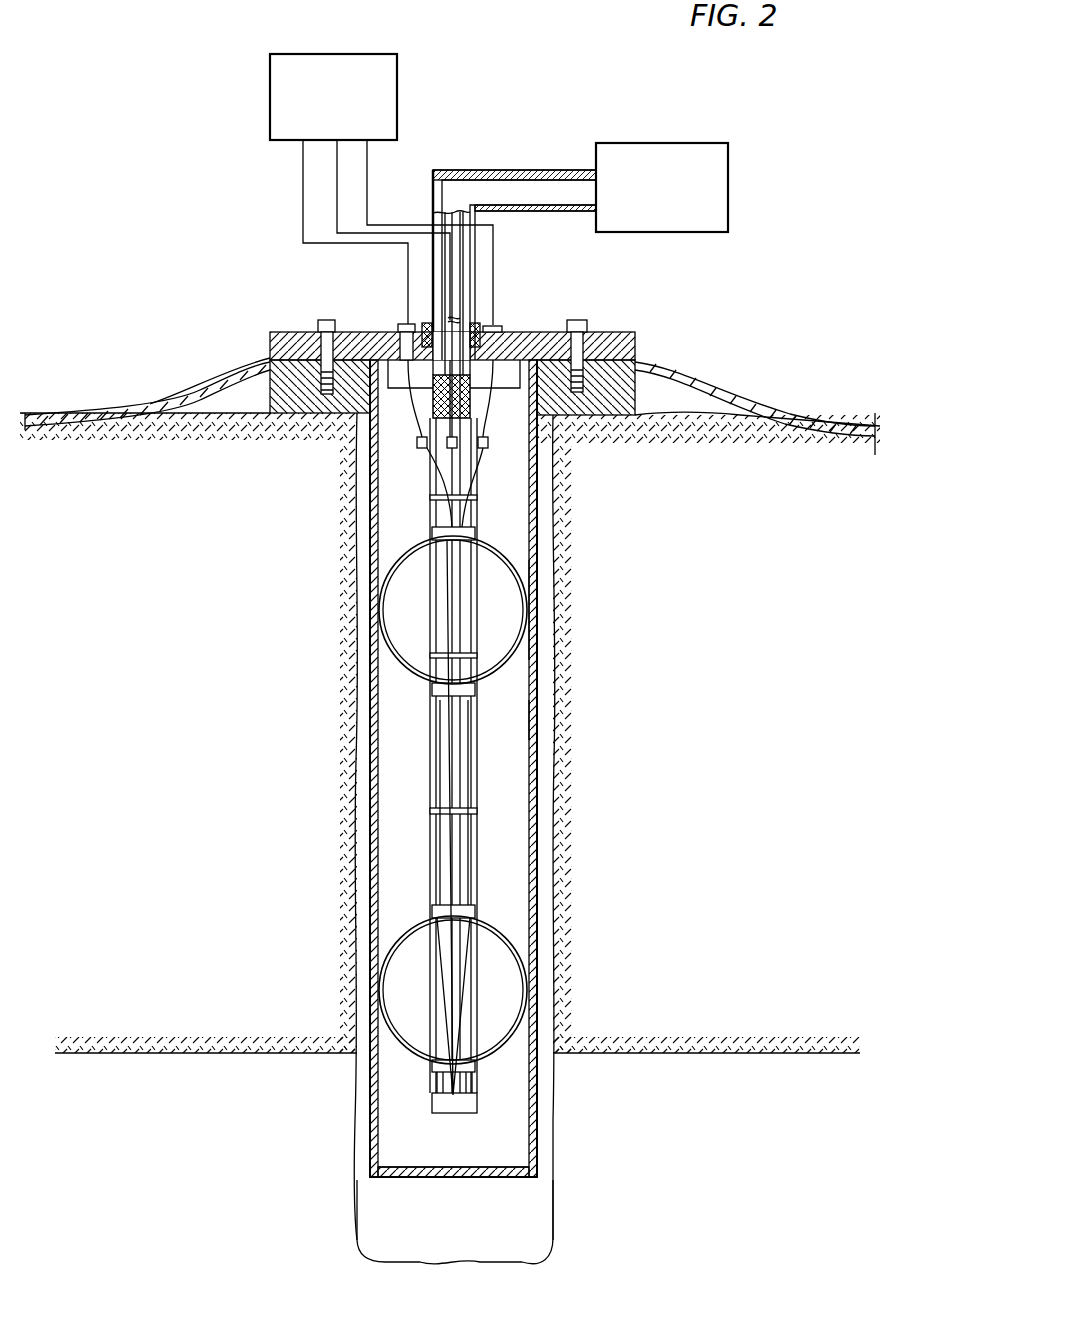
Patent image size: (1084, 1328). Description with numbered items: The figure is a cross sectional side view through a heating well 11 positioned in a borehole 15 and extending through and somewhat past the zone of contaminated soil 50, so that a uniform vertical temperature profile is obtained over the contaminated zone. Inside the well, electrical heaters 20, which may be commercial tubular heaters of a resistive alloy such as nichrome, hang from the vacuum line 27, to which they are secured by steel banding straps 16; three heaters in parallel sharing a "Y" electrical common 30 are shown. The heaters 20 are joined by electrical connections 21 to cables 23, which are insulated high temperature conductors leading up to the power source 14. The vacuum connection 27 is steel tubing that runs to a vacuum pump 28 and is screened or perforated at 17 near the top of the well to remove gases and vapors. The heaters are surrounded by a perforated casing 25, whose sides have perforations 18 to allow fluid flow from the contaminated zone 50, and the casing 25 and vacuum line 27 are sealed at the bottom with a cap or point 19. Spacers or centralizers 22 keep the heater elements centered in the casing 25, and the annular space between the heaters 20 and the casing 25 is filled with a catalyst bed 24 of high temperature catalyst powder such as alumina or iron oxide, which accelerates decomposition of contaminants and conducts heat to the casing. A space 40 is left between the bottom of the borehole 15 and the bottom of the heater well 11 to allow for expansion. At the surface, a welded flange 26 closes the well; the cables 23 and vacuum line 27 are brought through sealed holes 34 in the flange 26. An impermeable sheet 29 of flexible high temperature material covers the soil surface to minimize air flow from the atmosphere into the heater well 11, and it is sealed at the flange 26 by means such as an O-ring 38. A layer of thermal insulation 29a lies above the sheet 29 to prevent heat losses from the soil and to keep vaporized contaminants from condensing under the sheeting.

The heating well 11 is at (653, 769).
The power source 14 is at (270, 93).
The borehole 15 is at (545, 1185).
The steel banding straps 16 is at (427, 810).
The screened or perforated portion 17 is at (472, 400).
The perforations 18 is at (536, 635).
The cap or point 19 is at (427, 1168).
The electrical heaters 20 is at (480, 888).
The electrical connections 21 is at (417, 446).
The spacers or centralizers 22 is at (388, 560).
The cables 23 is at (292, 188).
The catalyst bed 24 is at (397, 1077).
The perforated casing 25 is at (535, 720).
The welded flange 26 is at (667, 352).
The vacuum connection 27 is at (498, 170).
The vacuum pump 28 is at (728, 179).
The impermeable sheet 29 is at (157, 428).
The thermal insulation 29a is at (176, 401).
The "Y" electrical common 30 is at (457, 1083).
The sealed holes 34 is at (500, 325).
The O-ring 38 is at (318, 332).
The space 40 is at (383, 1213).
The contaminated soil 50 is at (232, 838).